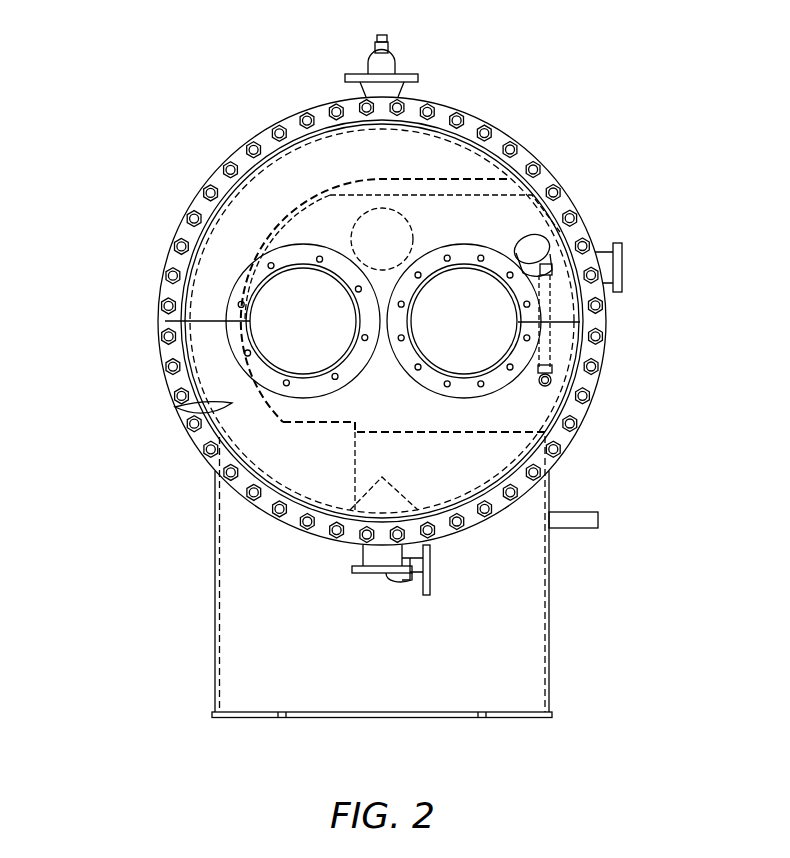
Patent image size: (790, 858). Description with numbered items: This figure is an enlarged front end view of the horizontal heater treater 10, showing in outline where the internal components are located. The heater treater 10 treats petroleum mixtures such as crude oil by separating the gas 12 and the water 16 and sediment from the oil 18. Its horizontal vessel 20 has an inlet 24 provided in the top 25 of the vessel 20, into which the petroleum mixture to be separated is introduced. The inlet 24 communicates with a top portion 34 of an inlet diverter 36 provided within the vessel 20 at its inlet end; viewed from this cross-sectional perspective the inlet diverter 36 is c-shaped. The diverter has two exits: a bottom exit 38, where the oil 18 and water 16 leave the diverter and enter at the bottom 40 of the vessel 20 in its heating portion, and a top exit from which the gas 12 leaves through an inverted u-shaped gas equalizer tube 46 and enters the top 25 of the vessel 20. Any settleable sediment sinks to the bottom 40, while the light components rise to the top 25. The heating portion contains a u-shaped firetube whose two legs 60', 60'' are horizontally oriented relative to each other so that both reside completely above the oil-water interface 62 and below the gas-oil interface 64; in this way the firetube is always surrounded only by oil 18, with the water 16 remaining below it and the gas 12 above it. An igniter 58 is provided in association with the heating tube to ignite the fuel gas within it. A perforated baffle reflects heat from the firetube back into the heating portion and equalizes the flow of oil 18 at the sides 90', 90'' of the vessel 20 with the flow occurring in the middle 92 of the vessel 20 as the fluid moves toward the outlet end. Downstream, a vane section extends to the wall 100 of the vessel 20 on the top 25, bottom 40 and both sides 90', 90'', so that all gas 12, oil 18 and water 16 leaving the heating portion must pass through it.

The heater treater 10 is at (612, 127).
The gas 12 is at (502, 191).
The water 16 is at (483, 452).
The oil 18 is at (537, 400).
The horizontal vessel 20 is at (476, 116).
The inlet 24 is at (413, 74).
The top 25 is at (312, 167).
The top portion 34 is at (300, 142).
The inlet diverter 36 is at (477, 177).
The bottom exit 38 is at (385, 372).
The bottom 40 is at (437, 510).
The gas equalizer tube 46 is at (390, 58).
The igniter 58 is at (540, 245).
The leg of the u-shaped firetube 60' is at (541, 320).
The leg of the u-shaped firetube 60'' is at (223, 321).
The oil-water interface 62 is at (505, 432).
The gas-oil interface 64 is at (515, 193).
The side of the vessel 90' is at (639, 337).
The side of the vessel 90'' is at (123, 335).
The middle of the vessel 92 is at (355, 458).
The wall 100 is at (175, 407).